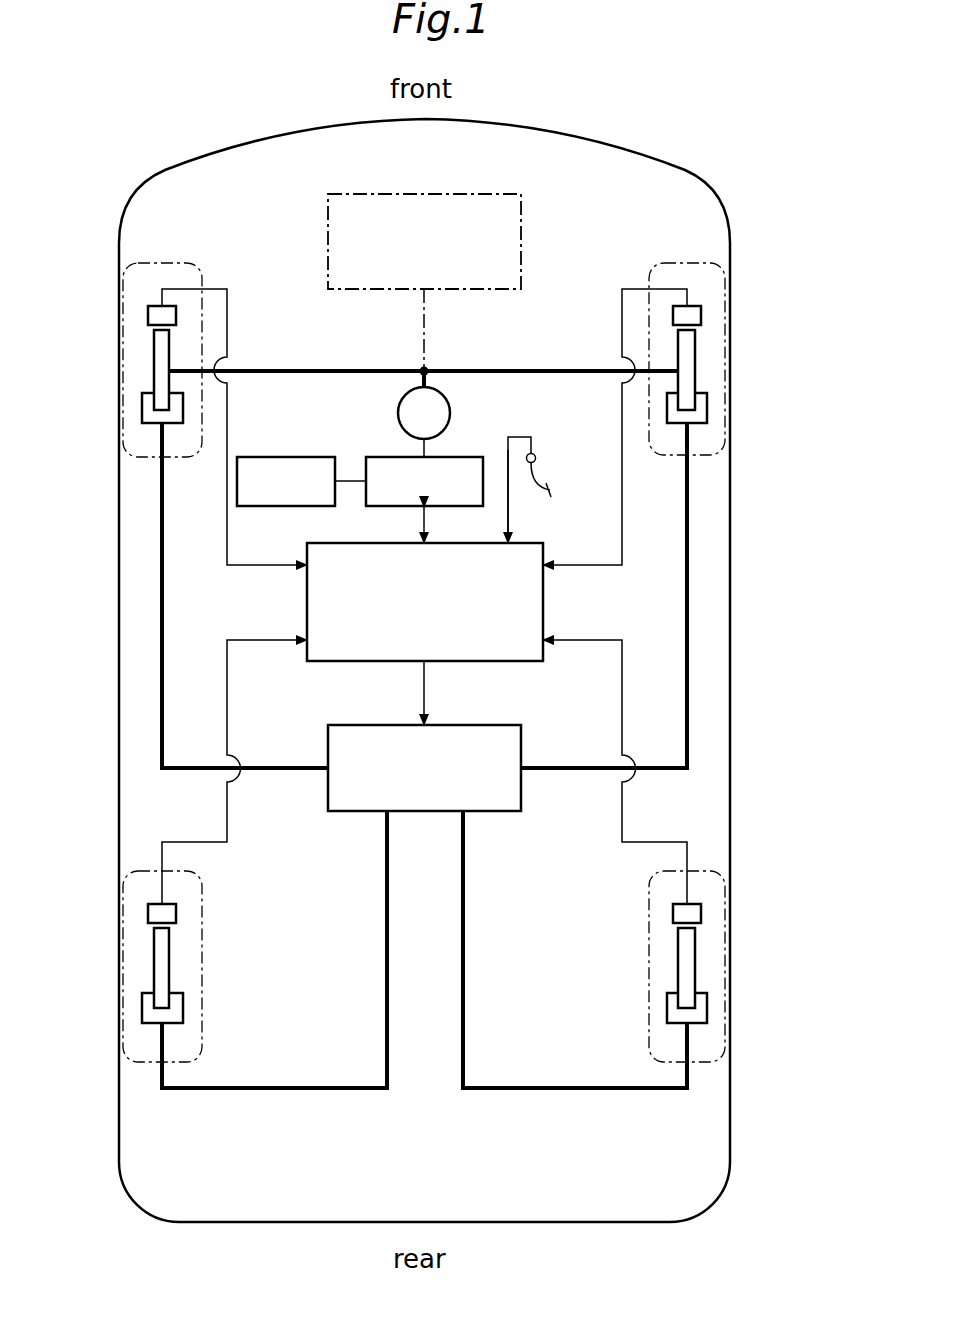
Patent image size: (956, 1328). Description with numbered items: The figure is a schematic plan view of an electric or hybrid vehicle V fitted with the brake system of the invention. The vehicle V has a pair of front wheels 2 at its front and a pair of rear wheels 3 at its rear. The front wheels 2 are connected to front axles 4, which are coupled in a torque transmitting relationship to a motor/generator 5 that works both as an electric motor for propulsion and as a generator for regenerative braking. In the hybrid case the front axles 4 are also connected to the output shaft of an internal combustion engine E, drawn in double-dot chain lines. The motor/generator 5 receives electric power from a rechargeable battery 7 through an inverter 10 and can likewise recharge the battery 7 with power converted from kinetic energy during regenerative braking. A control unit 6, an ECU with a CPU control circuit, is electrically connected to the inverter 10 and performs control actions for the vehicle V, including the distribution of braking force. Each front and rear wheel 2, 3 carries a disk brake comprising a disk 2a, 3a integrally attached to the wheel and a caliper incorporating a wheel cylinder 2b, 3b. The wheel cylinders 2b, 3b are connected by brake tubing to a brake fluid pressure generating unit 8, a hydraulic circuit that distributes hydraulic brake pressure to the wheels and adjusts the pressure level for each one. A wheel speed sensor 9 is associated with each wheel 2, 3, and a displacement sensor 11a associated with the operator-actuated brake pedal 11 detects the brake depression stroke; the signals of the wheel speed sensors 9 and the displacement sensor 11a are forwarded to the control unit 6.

The vehicle V is at (583, 140).
The internal combustion engine E is at (521, 218).
The front wheel 2 is at (125, 272).
The disk 2a is at (154, 365).
The wheel cylinder 2b is at (142, 410).
The rear wheel 3 is at (128, 1055).
The disk 3a is at (154, 958).
The wheel cylinder 3b is at (142, 1010).
The front axle 4 is at (315, 370).
The motor/generator 5 is at (450, 404).
The control unit 6 is at (307, 610).
The battery 7 is at (287, 457).
The brake fluid pressure generating unit 8 is at (475, 725).
The wheel speed sensor 9 is at (148, 317).
The inverter 10 is at (382, 457).
The brake pedal 11 is at (548, 490).
The displacement sensor 11a is at (536, 456).